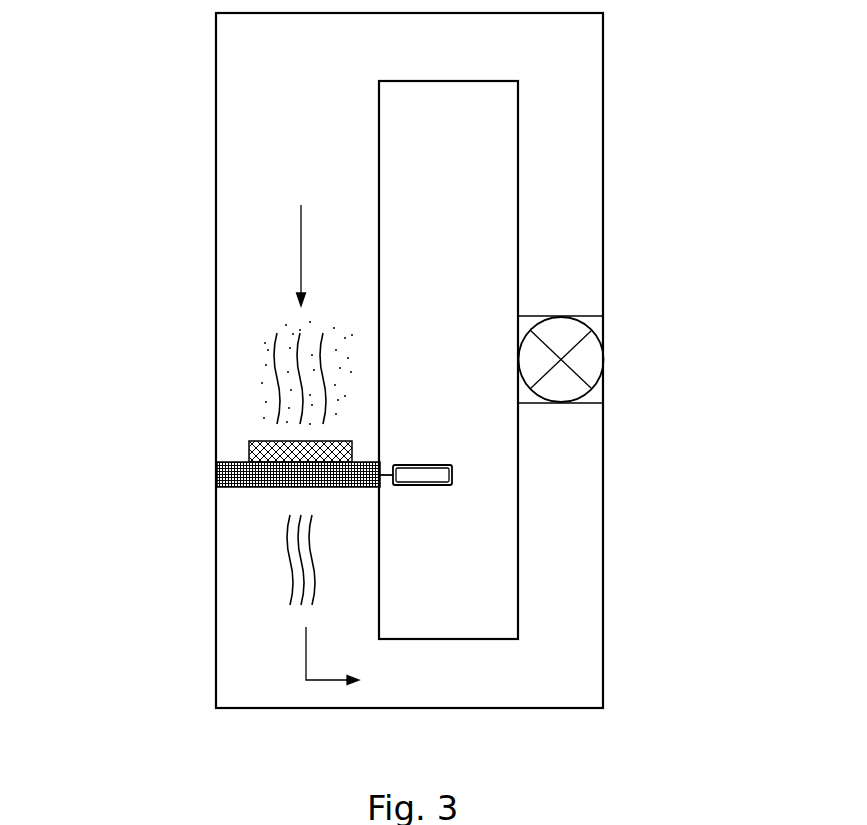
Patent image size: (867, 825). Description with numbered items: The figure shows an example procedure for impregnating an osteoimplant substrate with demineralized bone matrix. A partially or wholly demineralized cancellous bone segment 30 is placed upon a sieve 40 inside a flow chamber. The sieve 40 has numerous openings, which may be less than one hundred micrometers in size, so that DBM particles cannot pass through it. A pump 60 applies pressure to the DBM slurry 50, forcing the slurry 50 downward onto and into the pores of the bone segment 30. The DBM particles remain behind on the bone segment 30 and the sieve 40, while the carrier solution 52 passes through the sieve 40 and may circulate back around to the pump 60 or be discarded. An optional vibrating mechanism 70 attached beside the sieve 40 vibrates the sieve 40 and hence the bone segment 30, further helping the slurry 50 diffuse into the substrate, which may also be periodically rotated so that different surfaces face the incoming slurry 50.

The demineralized cancellous bone segment 30 is at (250, 443).
The sieve 40 is at (217, 477).
The DBM slurry 50 is at (277, 342).
The carrier solution 52 is at (277, 580).
The pump 60 is at (593, 357).
The vibrating mechanism 70 is at (422, 480).